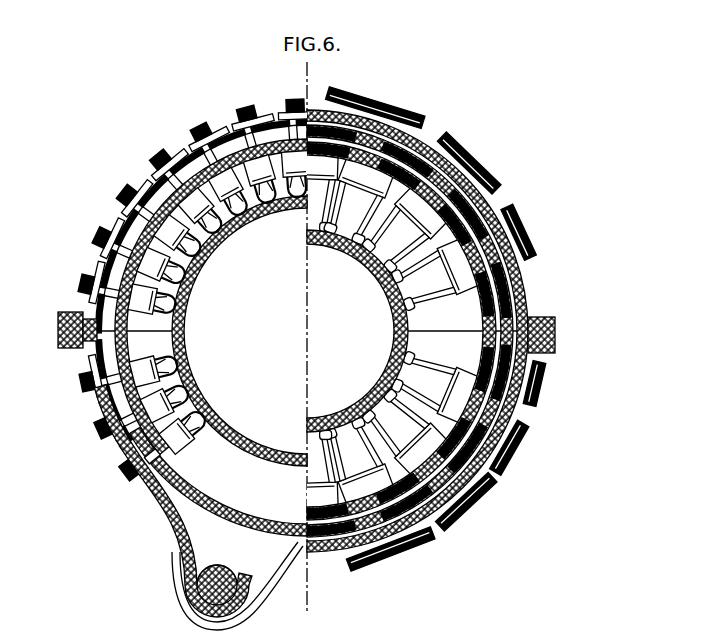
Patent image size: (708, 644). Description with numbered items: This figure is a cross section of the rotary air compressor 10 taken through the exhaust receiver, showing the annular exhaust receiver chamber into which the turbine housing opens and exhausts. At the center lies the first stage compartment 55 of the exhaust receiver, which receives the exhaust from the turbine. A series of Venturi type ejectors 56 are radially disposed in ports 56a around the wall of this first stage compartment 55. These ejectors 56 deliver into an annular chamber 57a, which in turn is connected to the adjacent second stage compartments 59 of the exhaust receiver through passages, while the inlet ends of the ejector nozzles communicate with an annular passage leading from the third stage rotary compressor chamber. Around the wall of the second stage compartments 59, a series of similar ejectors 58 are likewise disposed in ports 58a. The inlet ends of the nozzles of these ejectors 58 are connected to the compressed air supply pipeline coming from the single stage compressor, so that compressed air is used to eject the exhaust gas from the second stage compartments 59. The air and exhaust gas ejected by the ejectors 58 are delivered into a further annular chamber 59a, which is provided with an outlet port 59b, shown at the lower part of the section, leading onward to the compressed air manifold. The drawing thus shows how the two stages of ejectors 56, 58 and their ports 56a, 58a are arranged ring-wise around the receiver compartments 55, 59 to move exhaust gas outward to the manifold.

The dynamoelectric machine 10 is at (350, 112).
The first stage compartment 55 is at (458, 317).
The Venturi type ejectors 56 is at (448, 178).
The ports 56a is at (520, 393).
The annular chamber 57a is at (470, 432).
The ejectors 58 is at (190, 143).
The ports 58a is at (112, 404).
The second stage compartments 59 is at (143, 338).
The annular chamber 59a is at (213, 533).
The outlet port 59b is at (220, 587).